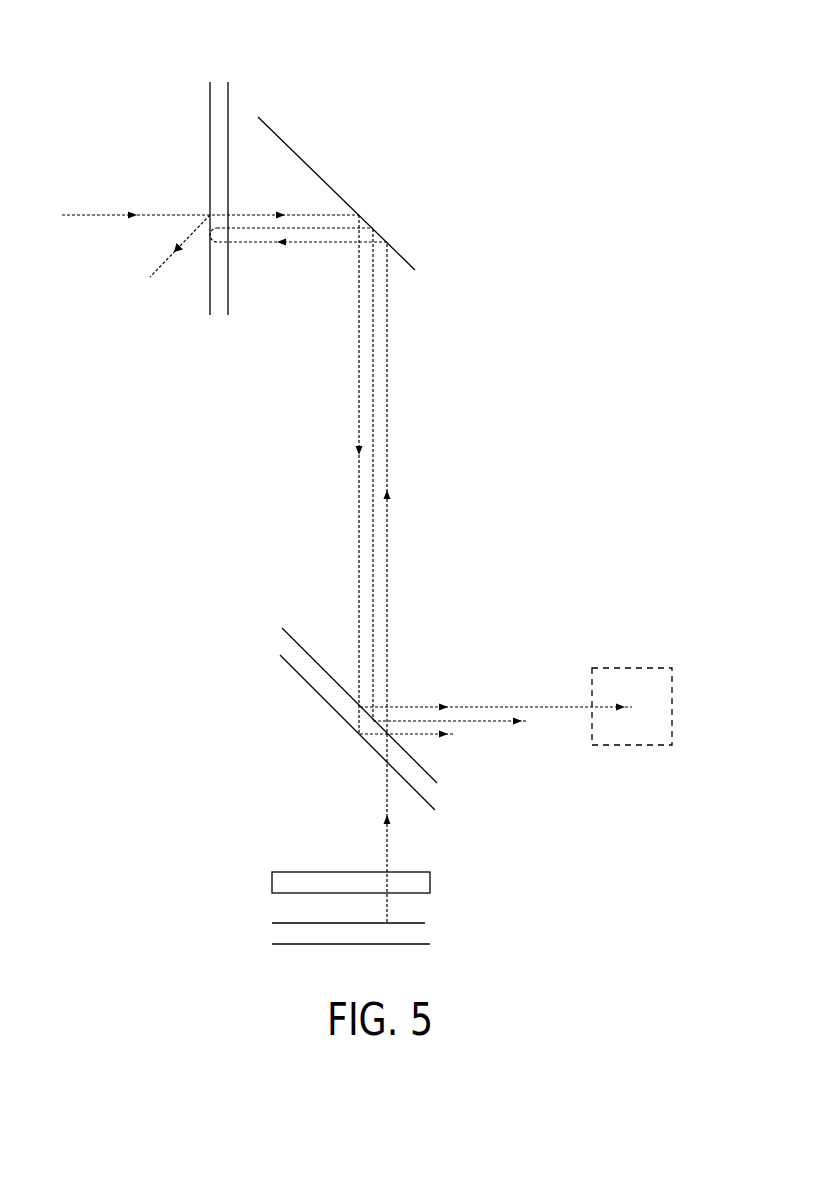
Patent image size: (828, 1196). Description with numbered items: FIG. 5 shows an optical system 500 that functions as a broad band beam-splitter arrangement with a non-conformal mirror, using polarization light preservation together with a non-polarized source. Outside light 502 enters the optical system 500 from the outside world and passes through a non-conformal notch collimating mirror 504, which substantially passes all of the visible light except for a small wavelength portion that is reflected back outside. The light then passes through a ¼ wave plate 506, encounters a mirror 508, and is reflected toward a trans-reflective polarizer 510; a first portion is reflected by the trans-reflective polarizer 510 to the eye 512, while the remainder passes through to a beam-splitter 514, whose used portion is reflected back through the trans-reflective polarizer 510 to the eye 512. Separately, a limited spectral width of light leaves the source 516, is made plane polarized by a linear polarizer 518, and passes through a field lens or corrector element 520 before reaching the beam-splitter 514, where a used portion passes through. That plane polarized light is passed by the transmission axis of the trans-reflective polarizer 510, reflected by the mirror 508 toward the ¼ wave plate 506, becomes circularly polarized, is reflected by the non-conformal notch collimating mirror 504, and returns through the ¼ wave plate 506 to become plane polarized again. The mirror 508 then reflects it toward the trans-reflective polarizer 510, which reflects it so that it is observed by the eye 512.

The optical system 500 is at (474, 496).
The outside light 502 is at (210, 200).
The non-conformal notch collimating mirror 504 is at (212, 95).
The ¼ wave plate 506 is at (230, 115).
The mirror 508 is at (332, 188).
The trans-reflective polarizer 510 is at (284, 635).
The eye 512 is at (632, 683).
The beam-splitter 514 is at (298, 673).
The source 516 is at (422, 944).
The linear polarizer 518 is at (418, 923).
The field lens or corrector element 520 is at (272, 883).